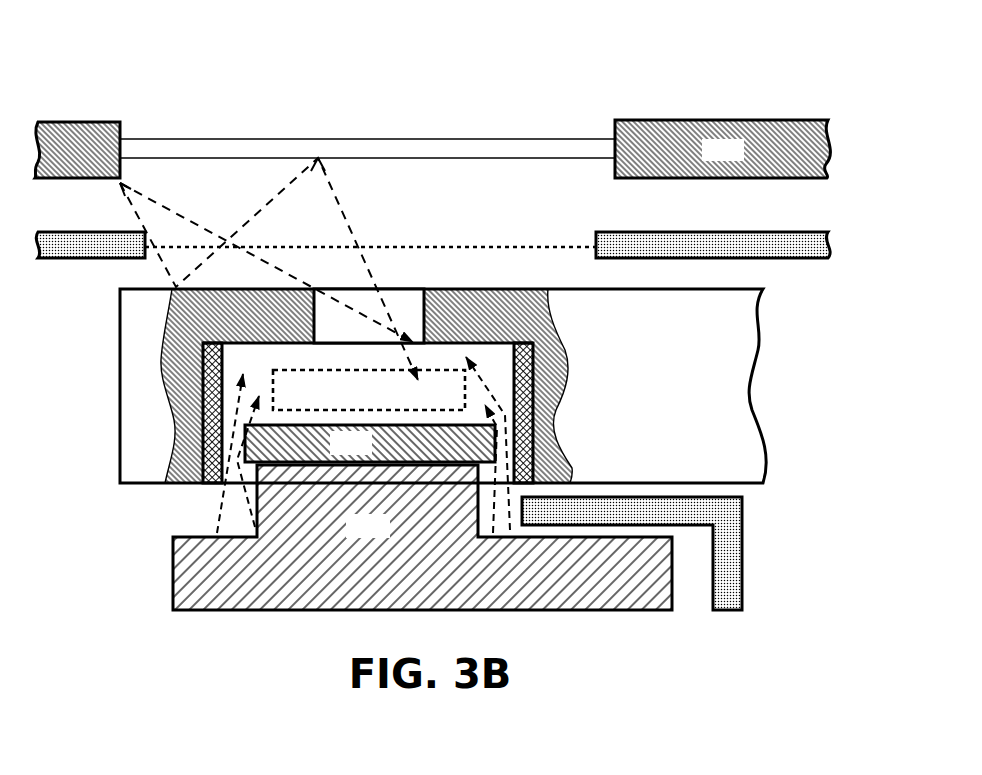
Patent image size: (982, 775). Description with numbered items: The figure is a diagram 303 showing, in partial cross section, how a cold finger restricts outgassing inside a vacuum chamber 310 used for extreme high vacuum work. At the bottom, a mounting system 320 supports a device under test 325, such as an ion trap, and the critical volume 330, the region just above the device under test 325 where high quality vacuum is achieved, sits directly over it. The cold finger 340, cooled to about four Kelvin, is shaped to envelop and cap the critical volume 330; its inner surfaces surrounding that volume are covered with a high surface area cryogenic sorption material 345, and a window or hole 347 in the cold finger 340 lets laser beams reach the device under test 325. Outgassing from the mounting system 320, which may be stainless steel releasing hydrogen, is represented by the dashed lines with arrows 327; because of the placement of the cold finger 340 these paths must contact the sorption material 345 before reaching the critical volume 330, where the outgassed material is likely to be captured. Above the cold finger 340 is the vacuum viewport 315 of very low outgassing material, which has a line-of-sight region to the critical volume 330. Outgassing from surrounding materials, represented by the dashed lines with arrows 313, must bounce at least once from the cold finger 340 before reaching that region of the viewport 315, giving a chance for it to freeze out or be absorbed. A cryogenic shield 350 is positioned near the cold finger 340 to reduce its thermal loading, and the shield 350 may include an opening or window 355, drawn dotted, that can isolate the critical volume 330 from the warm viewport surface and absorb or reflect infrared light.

The diagram 303 is at (711, 49).
The vacuum chamber 310 is at (706, 160).
The dashed lines with arrows (outgassing toward the viewport) 313 is at (263, 202).
The vacuum viewport 315 is at (442, 135).
The mounting system 320 is at (350, 536).
The device under test (DUT) 325 is at (333, 453).
The dashed lines with arrows (outgassing from the mounting system) 327 is at (229, 503).
The critical volume 330 is at (353, 400).
The cold finger 340 is at (643, 393).
The high surface area cryogenic sorption material 345 is at (200, 394).
The window or hole 347 is at (325, 339).
The cryogenic shield 350 is at (792, 267).
The opening or window 355 is at (516, 244).